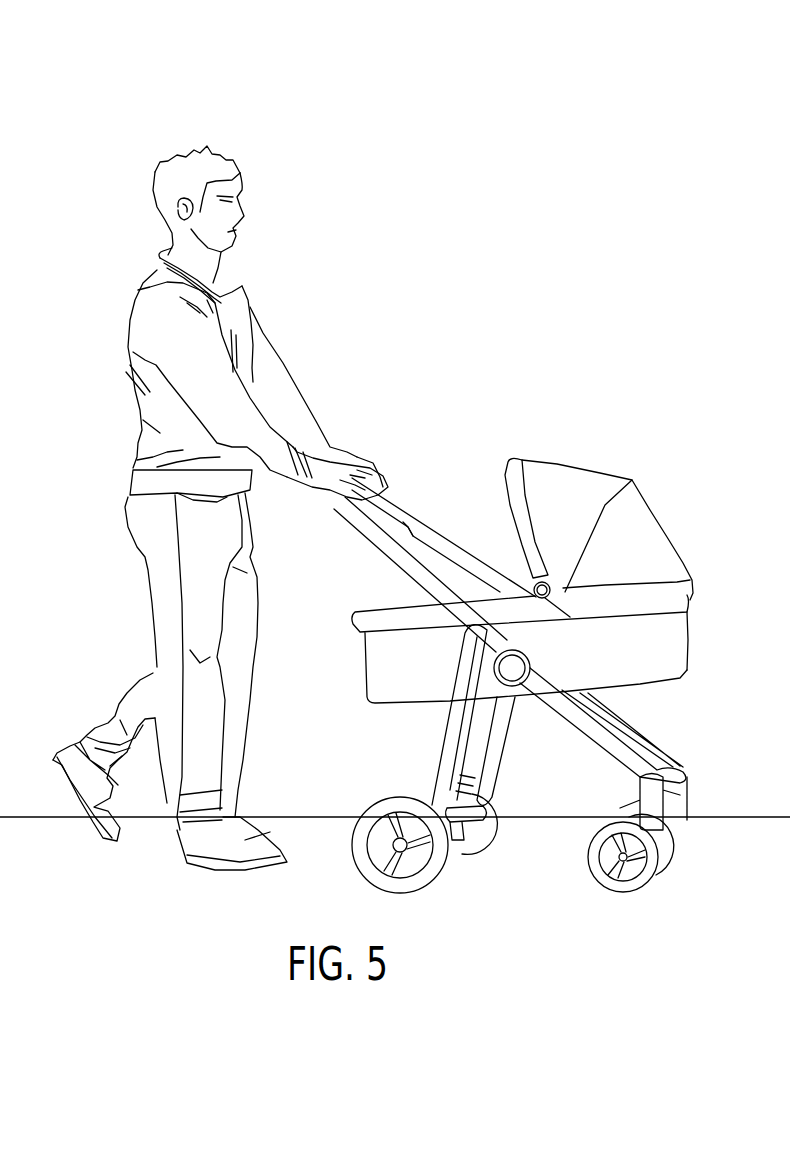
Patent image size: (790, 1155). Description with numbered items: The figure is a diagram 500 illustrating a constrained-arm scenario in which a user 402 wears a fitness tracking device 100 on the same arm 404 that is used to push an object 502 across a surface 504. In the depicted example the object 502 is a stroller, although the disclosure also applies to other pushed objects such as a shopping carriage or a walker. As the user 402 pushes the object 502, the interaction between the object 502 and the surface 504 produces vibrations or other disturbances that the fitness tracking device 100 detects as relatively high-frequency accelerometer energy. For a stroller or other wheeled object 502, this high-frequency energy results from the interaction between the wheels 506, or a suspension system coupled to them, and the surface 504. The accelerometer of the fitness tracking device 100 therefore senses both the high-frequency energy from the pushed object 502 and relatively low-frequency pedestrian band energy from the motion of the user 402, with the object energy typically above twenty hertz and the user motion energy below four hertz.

The fitness tracking device 100 is at (303, 487).
The user 402 is at (110, 138).
The arm 404 is at (263, 477).
The diagram 500 is at (322, 90).
The object 502 is at (437, 532).
The surface 504 is at (310, 817).
The wheels 506 is at (440, 875).